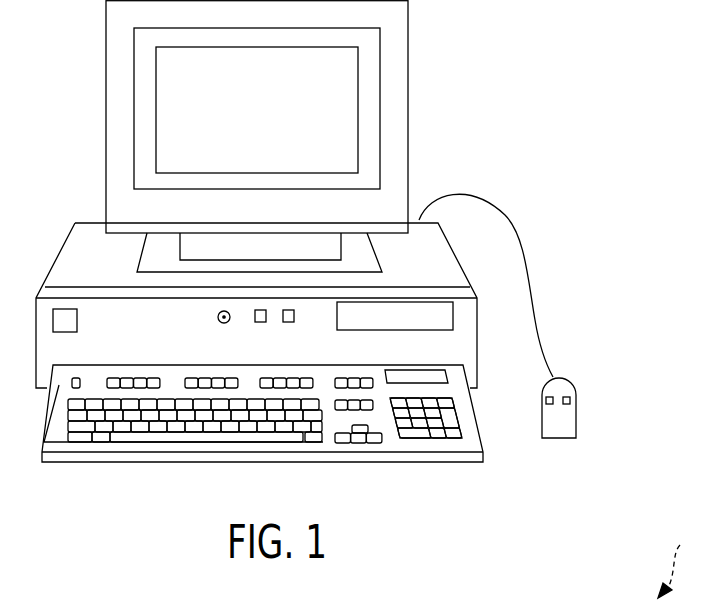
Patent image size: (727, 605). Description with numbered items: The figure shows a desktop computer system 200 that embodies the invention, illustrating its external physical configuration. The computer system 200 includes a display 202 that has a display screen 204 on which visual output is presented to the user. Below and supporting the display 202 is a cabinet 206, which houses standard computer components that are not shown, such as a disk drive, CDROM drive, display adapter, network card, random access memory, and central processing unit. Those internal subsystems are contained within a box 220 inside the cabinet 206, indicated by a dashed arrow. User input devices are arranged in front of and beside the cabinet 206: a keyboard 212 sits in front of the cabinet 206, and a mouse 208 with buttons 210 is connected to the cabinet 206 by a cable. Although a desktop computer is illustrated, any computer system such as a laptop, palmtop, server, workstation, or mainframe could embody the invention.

The computer system 200 is at (508, 23).
The display 202 is at (408, 137).
The display screen 204 is at (341, 81).
The cabinet 206 is at (440, 262).
The mouse 208 is at (568, 430).
The buttons 210 is at (553, 377).
The keyboard 212 is at (193, 462).
The box 220 is at (684, 561).